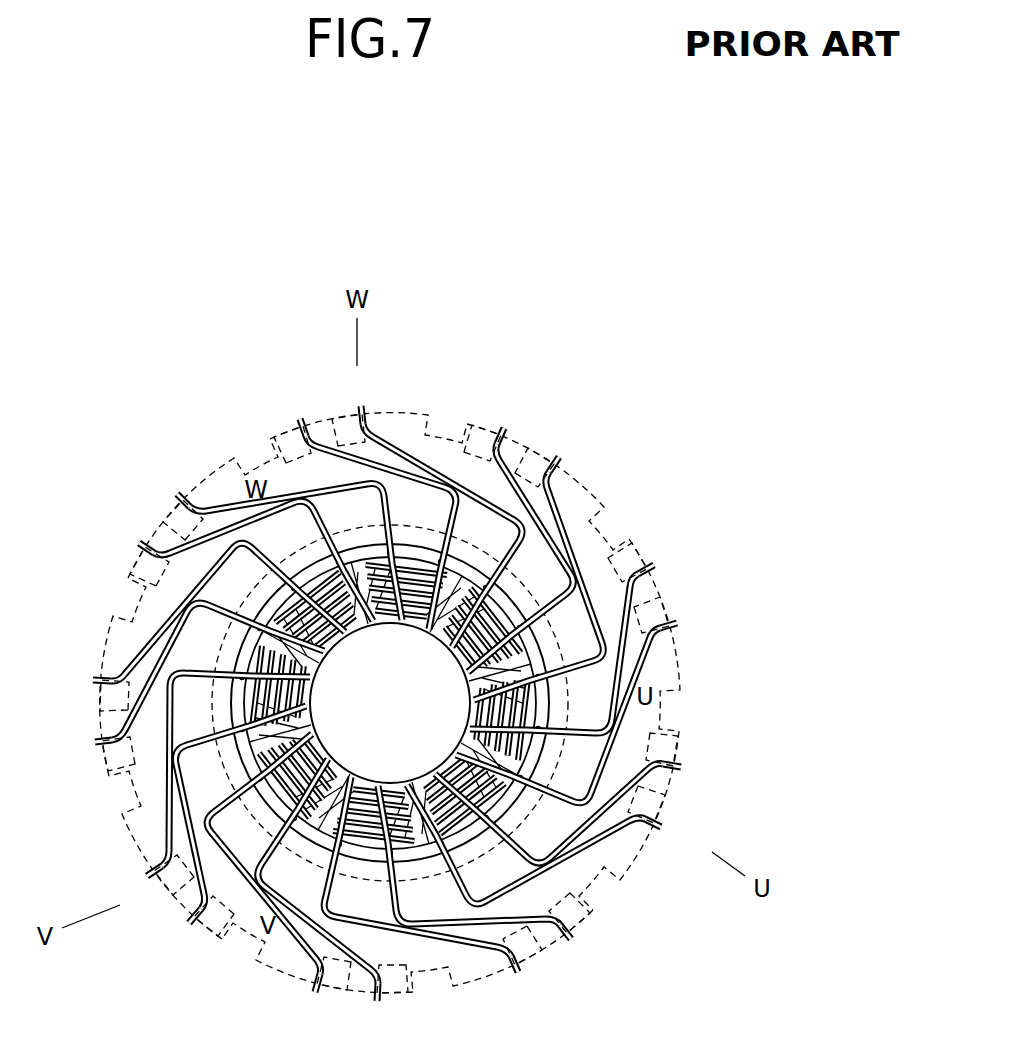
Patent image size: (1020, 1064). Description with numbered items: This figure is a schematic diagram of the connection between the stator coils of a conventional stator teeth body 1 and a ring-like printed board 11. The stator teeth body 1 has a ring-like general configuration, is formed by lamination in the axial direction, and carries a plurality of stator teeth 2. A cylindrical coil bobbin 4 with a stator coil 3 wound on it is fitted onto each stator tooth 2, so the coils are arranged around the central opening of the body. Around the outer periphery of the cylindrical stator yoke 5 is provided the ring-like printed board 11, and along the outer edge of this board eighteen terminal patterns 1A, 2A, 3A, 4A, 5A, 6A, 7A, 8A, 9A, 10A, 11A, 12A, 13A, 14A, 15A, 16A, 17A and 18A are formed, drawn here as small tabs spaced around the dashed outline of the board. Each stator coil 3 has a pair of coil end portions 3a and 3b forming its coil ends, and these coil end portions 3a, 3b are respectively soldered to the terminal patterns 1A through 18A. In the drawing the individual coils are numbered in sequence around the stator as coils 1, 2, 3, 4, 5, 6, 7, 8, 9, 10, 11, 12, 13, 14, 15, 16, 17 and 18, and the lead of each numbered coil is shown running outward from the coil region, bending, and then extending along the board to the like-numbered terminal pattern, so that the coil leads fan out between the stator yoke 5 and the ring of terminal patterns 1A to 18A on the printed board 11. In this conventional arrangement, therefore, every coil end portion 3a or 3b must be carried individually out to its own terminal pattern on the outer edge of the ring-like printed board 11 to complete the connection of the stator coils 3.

The stator teeth body 1 is at (409, 866).
The stator teeth 2 is at (308, 871).
The stator coil 3 is at (261, 854).
The cylindrical coil bobbin 4 is at (240, 807).
The cylindrical stator yoke 5 is at (236, 754).
The coil 6 is at (218, 661).
The coil 7 is at (228, 606).
The coil 8 is at (263, 561).
The coil 9 is at (297, 552).
The coil 10 is at (397, 532).
The ring-like printed board 11 is at (452, 535).
The coil 12 is at (525, 558).
The coil 13 is at (538, 587).
The coil 14 is at (554, 671).
The coil 15 is at (558, 728).
The coil 16 is at (549, 820).
The coil 17 is at (526, 844).
The coil 18 is at (457, 855).
The terminal pattern 1A is at (527, 966).
The terminal pattern 2A is at (385, 1000).
The terminal pattern 3A is at (326, 995).
The terminal pattern 4A is at (201, 924).
The terminal pattern 5A is at (157, 879).
The terminal pattern 6A is at (96, 751).
The terminal pattern 7A is at (91, 692).
The terminal pattern 8A is at (134, 553).
The terminal pattern 9A is at (170, 505).
The terminal pattern 10A is at (301, 425).
The terminal pattern 11A is at (357, 408).
The terminal pattern 12A is at (497, 429).
The terminal pattern 13A is at (552, 455).
The terminal pattern 14A is at (662, 563).
The terminal pattern 15A is at (685, 617).
The terminal pattern 16A is at (693, 762).
The terminal pattern 17A is at (676, 818).
The terminal pattern 18A is at (585, 933).
The coil end portion 3a is at (100, 738).
The coil end portion 3b is at (100, 675).